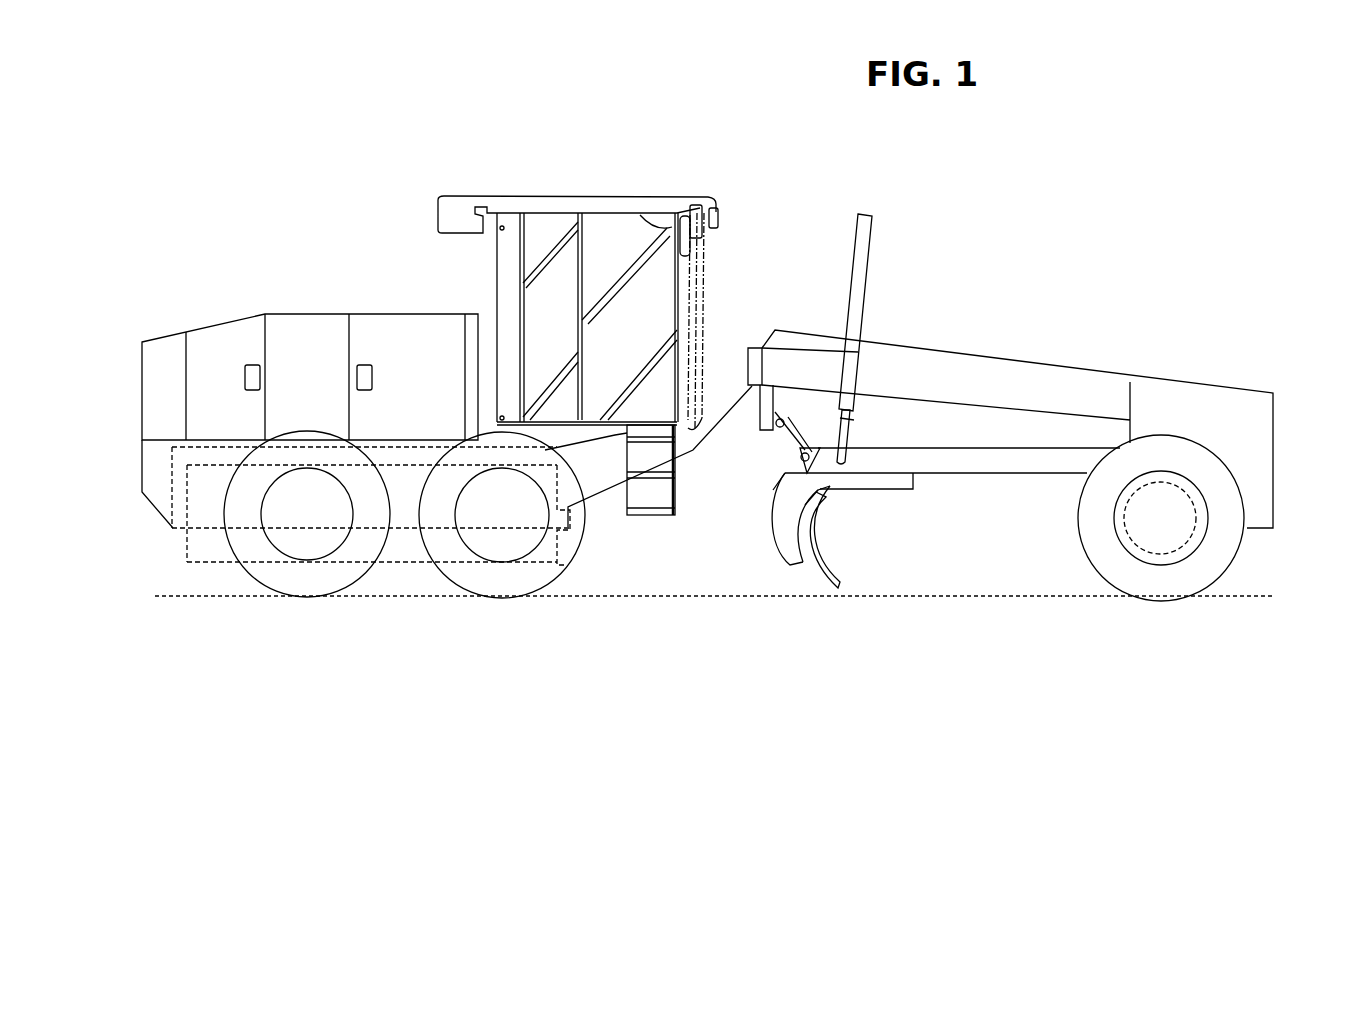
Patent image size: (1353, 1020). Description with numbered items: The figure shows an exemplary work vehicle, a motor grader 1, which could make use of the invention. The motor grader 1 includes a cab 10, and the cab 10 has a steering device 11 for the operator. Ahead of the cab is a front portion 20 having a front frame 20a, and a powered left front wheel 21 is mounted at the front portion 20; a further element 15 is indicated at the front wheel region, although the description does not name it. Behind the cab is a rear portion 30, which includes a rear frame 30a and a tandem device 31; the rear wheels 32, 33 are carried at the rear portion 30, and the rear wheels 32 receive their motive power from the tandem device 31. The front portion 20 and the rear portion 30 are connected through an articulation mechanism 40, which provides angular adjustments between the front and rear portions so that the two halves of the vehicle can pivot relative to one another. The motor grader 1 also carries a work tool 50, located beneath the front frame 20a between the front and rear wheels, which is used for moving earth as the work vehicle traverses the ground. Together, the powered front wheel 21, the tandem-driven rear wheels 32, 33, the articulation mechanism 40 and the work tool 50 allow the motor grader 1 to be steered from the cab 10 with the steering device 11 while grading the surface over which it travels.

The motor grader 1 is at (533, 140).
The cab 10 is at (593, 190).
The steering device 11 is at (648, 293).
The front axle drive unit 15 is at (1167, 500).
The front portion 20 is at (1073, 248).
The front frame 20a is at (1074, 388).
The powered left front wheel 21 is at (1195, 577).
The rear portion 30 is at (235, 230).
The rear frame 30a is at (340, 313).
The tandem device 31 is at (403, 478).
The rear wheel 32 is at (532, 575).
The rear wheel 33 is at (333, 573).
The articulation mechanism 40 is at (560, 553).
The work tool 50 is at (827, 552).